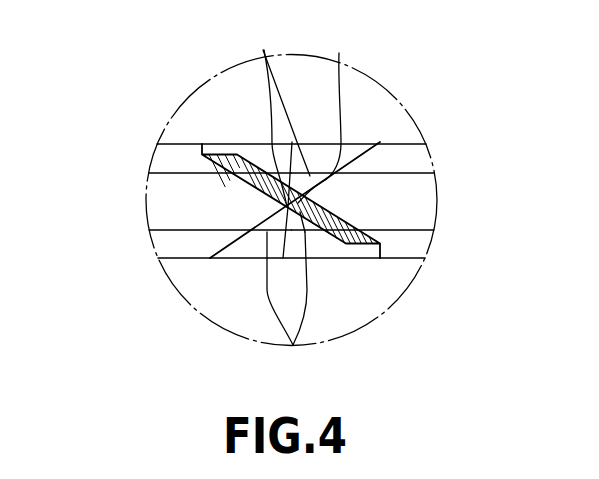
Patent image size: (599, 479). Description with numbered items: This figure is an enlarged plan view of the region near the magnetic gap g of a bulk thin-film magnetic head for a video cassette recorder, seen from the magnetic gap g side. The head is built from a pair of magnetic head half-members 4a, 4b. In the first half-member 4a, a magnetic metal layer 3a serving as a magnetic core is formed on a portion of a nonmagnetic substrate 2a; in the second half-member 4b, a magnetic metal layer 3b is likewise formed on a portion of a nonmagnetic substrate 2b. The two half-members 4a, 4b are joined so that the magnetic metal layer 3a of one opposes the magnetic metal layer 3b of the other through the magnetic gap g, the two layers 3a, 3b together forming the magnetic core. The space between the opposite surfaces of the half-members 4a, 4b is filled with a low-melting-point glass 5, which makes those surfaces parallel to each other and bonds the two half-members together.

The nonmagnetic substrate 2a is at (164, 196).
The nonmagnetic substrate 2b is at (427, 200).
The magnetic metal layer 3a is at (286, 203).
The magnetic metal layer 3b is at (327, 209).
The magnetic head half-member 4a is at (198, 136).
The magnetic head half-member 4b is at (386, 134).
The low-melting-point glass 5 is at (281, 202).
The magnetic gap g is at (324, 112).